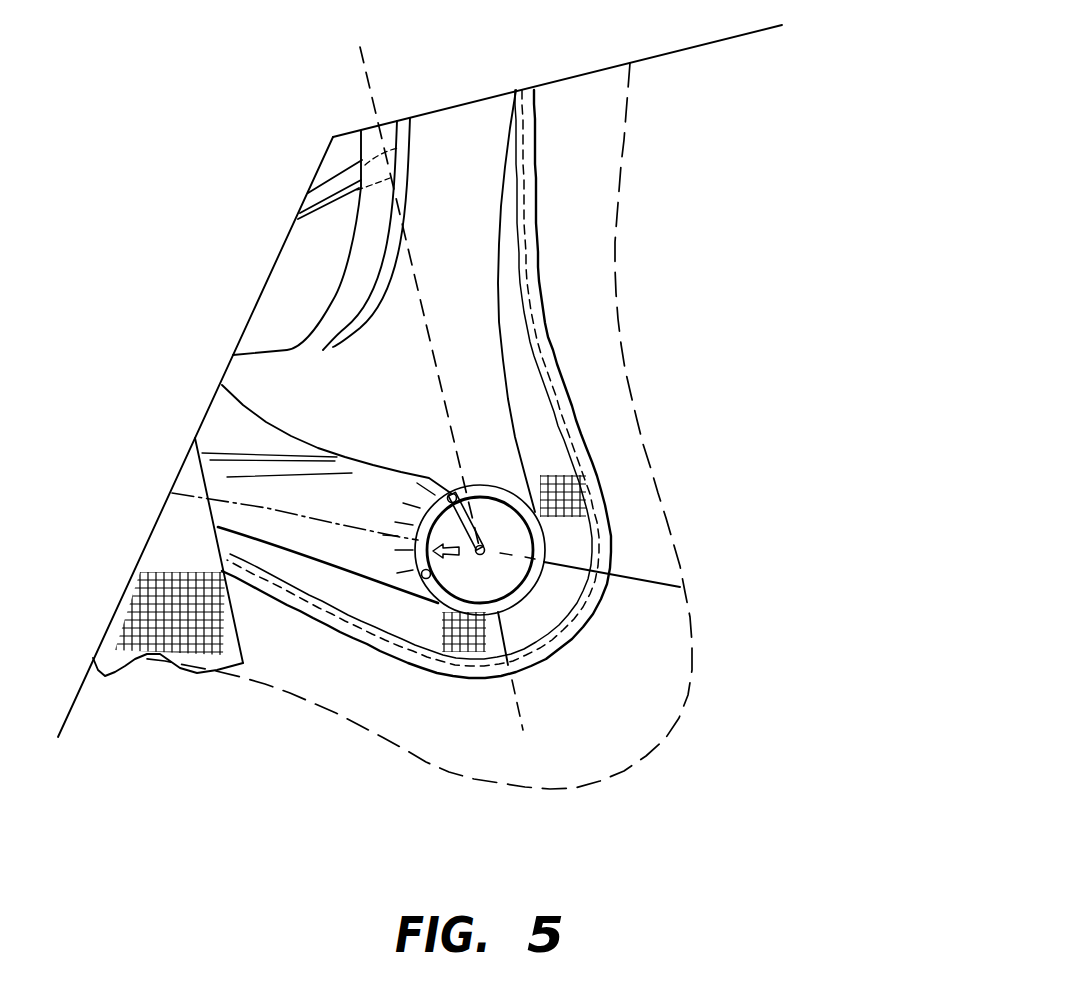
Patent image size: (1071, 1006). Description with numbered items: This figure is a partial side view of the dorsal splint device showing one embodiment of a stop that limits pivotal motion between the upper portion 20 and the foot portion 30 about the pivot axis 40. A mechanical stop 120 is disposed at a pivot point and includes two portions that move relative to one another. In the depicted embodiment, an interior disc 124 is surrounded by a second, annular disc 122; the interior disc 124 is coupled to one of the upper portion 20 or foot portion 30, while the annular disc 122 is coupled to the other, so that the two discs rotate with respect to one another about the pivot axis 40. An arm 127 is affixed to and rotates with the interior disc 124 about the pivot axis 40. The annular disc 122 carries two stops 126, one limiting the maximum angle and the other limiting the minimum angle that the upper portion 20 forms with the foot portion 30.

The upper portion 20 is at (503, 384).
The foot portion 30 is at (411, 460).
The pivot axis 40 is at (595, 603).
The mechanical stop 120 is at (408, 427).
The annular disc 122 is at (586, 549).
The interior disc 124 is at (597, 680).
The stop 126 is at (317, 546).
The arm 127 is at (592, 451).